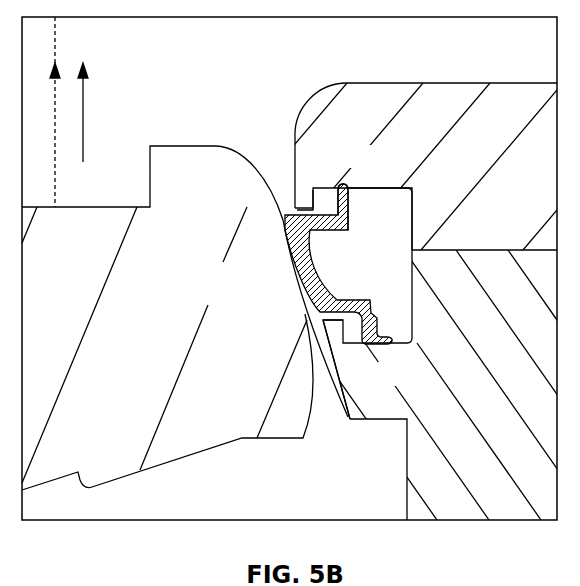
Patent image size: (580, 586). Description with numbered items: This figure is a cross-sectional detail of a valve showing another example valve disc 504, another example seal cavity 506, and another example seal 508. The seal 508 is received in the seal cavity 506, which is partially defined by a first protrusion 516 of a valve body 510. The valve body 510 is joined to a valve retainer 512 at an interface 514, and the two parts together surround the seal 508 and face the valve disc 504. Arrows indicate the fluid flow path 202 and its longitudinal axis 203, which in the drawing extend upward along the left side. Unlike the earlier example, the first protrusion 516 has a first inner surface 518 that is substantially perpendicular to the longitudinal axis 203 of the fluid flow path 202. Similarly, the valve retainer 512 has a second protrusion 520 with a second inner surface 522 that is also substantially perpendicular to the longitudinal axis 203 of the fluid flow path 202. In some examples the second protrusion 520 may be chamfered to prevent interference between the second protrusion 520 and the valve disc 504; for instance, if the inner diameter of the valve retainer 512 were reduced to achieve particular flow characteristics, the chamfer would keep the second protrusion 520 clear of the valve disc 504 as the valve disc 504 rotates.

The fluid flow path 202 is at (84, 102).
The longitudinal axis 203 is at (56, 37).
The valve disc 504 is at (167, 146).
The seal cavity 506 is at (393, 270).
The seal 508 is at (284, 237).
The valve body 510 is at (425, 450).
The valve retainer 512 is at (397, 103).
The interface 514 is at (463, 248).
The first protrusion 516 is at (351, 360).
The first inner surface 518 is at (308, 315).
The second protrusion 520 is at (304, 172).
The second inner surface 522 is at (285, 219).